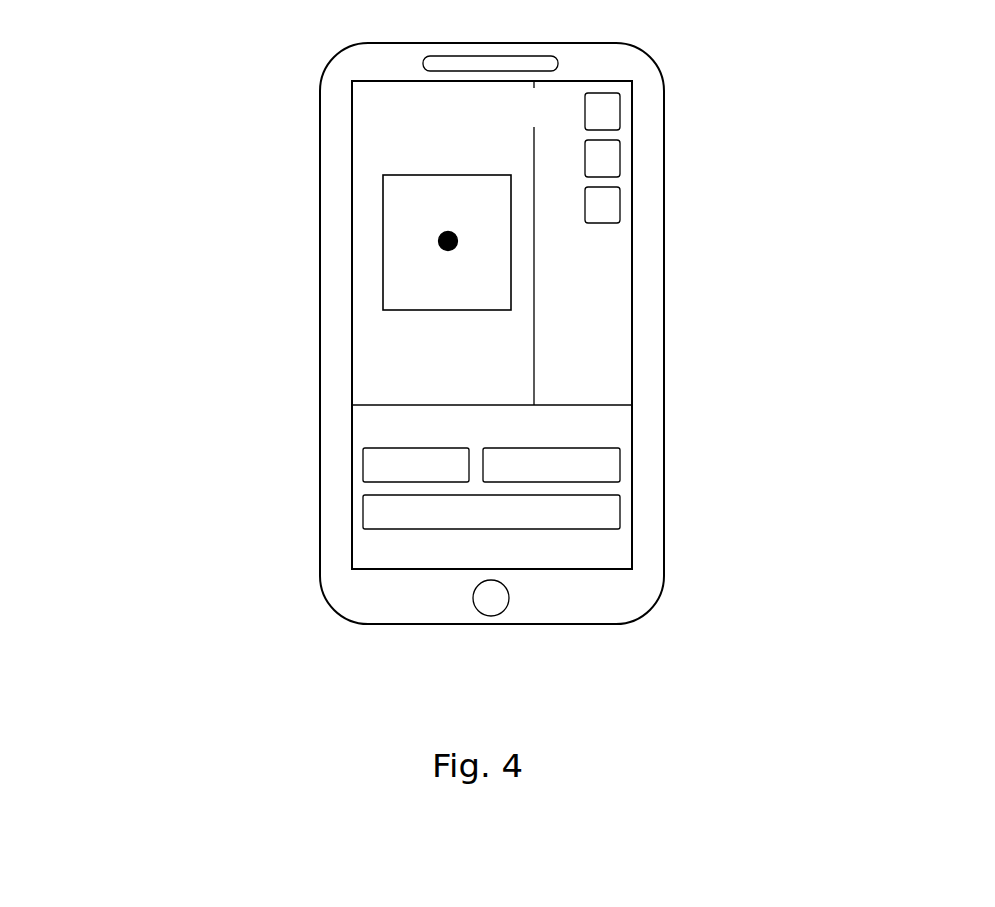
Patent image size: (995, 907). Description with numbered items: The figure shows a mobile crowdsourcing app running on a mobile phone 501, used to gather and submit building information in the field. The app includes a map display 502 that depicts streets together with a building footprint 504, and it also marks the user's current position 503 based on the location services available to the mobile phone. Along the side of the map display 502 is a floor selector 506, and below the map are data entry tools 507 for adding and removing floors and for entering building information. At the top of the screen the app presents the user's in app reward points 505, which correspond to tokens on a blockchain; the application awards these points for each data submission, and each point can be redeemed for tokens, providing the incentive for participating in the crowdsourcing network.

The Mobile Phone 501 is at (320, 540).
The Map Display 502 is at (383, 358).
The Current Position 503 is at (440, 242).
The Building Footprint 504 is at (383, 182).
The In App Reward Points 505 is at (417, 105).
The Floor Selector 506 is at (620, 112).
The Data Entry Tools 507 is at (587, 488).